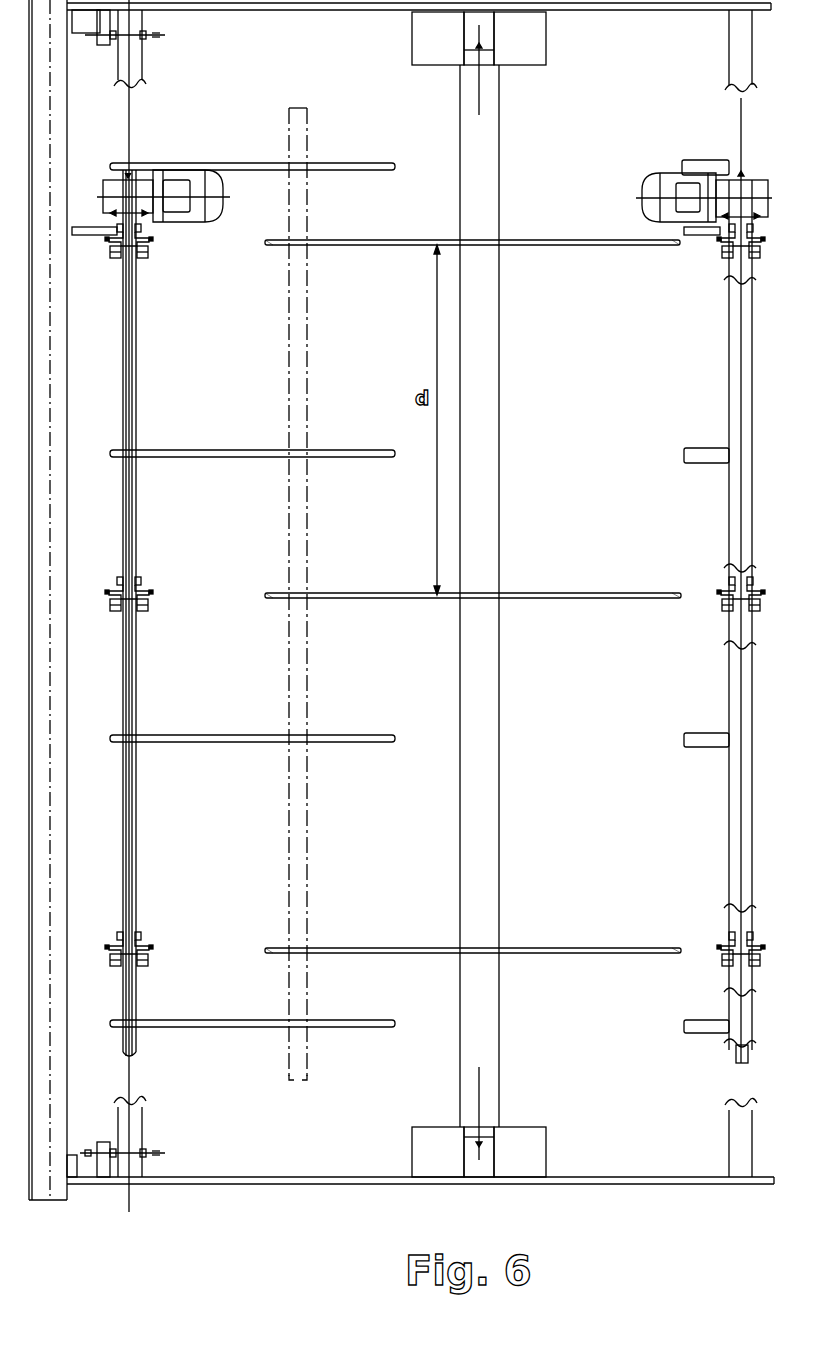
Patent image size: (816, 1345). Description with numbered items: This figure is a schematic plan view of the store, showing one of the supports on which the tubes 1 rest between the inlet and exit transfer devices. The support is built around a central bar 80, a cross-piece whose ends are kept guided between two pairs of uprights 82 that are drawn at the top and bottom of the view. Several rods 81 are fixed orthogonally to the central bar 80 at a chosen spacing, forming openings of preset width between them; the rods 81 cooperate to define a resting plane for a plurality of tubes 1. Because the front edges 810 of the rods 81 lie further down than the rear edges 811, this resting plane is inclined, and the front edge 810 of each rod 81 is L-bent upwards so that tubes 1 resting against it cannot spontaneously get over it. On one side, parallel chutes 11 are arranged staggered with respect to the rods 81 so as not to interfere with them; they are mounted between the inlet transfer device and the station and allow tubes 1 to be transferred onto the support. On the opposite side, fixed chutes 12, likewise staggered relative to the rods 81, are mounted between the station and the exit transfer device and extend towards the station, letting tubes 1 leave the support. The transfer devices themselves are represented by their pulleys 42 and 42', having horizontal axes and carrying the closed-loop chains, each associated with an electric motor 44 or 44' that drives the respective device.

The tubes 1 is at (308, 672).
The chutes 11 is at (708, 160).
The fixed chutes 12 is at (243, 163).
The pulley 42 is at (748, 595).
The pulley 42' is at (136, 595).
The electric motor 44 is at (704, 161).
The electric motor 44' is at (163, 250).
The central bar 80 is at (490, 758).
The rods 81 is at (527, 240).
The front edge 810 is at (260, 250).
The rear edge 811 is at (672, 251).
The uprights 82 is at (412, 37).